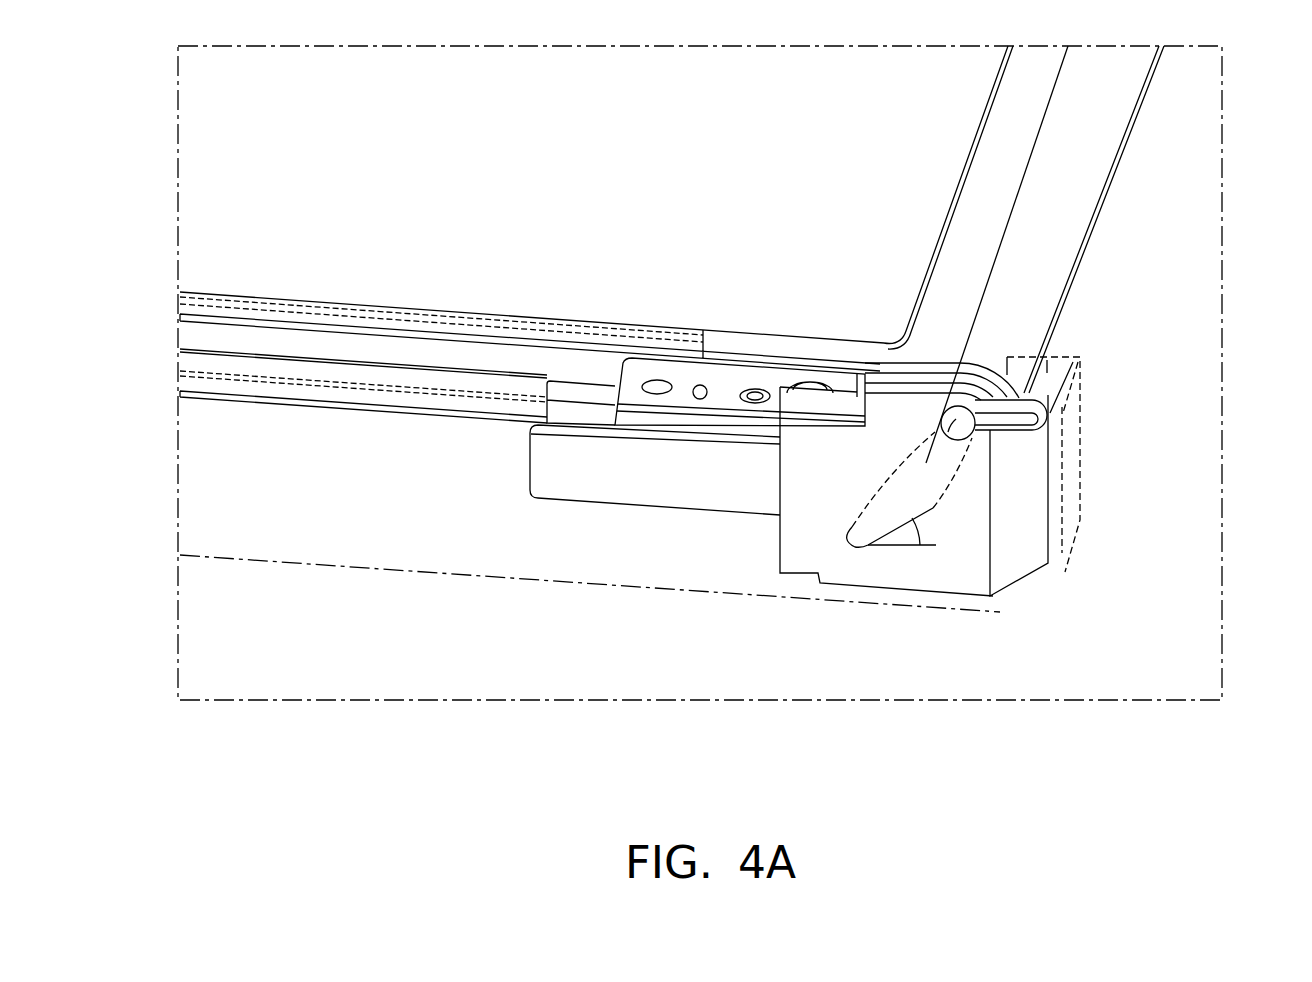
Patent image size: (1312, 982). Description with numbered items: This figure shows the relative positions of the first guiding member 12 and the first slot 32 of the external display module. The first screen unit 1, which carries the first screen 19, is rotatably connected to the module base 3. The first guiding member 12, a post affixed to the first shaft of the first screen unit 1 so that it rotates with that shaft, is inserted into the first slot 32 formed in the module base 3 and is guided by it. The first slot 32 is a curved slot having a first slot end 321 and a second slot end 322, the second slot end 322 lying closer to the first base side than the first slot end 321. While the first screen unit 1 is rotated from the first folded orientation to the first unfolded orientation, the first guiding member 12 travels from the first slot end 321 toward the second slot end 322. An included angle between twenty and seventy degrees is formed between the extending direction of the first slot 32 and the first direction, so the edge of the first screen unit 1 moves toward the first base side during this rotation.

The first screen 19 is at (206, 172).
The first screen unit 1 is at (1013, 208).
The first guiding member 12 is at (1022, 394).
The module base 3 is at (588, 583).
The first slot 32 is at (932, 614).
The first slot end 321 is at (963, 440).
The second slot end 322 is at (870, 528).